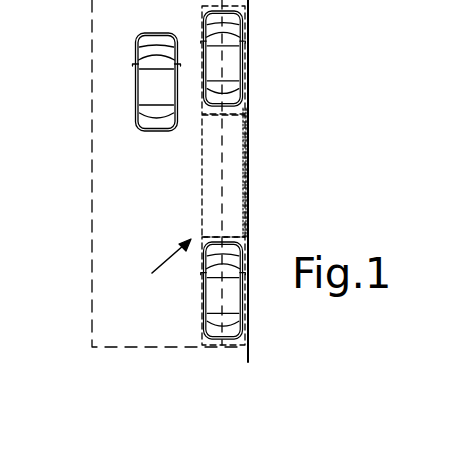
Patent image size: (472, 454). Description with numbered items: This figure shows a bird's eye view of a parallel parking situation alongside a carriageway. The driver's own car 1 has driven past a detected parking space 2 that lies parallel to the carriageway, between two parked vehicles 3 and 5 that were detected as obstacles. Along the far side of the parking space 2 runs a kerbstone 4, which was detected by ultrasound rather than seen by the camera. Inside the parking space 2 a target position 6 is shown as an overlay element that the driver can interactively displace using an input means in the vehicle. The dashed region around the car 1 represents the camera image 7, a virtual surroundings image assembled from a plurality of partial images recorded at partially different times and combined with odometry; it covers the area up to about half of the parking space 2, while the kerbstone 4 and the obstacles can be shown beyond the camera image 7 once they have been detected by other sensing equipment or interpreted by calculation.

The car 1 is at (148, 87).
The parking space 2 is at (163, 268).
The parked vehicle 3 is at (232, 56).
The kerbstone 4 is at (250, 130).
The parked vehicle 5 is at (244, 253).
The target position 6 is at (215, 202).
The camera image 7 is at (135, 348).